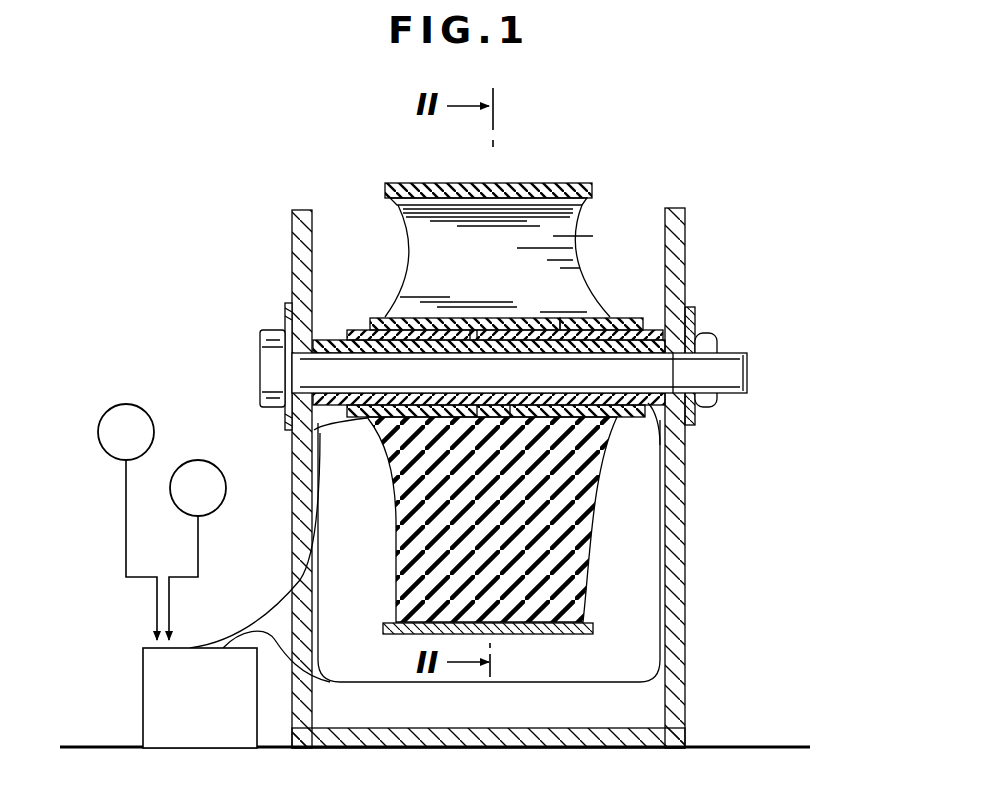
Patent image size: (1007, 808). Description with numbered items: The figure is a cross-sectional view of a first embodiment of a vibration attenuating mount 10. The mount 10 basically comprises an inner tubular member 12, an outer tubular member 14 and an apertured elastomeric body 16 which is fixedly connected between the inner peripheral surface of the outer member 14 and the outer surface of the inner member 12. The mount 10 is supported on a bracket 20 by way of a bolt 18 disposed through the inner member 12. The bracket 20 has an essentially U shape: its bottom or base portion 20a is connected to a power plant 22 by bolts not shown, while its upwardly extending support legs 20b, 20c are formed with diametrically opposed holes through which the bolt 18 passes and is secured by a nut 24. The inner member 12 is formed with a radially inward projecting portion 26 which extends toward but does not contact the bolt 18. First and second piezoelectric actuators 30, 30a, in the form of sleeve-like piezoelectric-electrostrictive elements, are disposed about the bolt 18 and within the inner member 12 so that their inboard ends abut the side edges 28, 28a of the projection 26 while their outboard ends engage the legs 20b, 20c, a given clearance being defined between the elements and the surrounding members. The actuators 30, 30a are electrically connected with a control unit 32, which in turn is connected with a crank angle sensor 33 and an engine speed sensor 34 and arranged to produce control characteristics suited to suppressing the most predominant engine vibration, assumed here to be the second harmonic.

The vibration attenuating mount 10 is at (490, 214).
The inner tubular member 12 is at (345, 333).
The outer tubular member 14 is at (393, 630).
The apertured elastomeric body 16 is at (575, 557).
The bolt 18 is at (737, 393).
The bracket 20 is at (494, 502).
The base portion of bracket 20a is at (613, 737).
The support leg 20b is at (300, 522).
The support leg 20c is at (677, 538).
The power plant 22 is at (732, 745).
The nut 24 is at (708, 334).
The radially inward projecting portion 26 is at (478, 333).
The side edge of projection 28 is at (433, 318).
The side edge of projection 28a is at (572, 319).
The first piezoelectric actuator 30 is at (332, 408).
The second piezoelectric actuator 30a is at (686, 466).
The control unit 32 is at (143, 690).
The crank angle sensor 33 is at (198, 460).
The engine speed sensor 34 is at (127, 403).